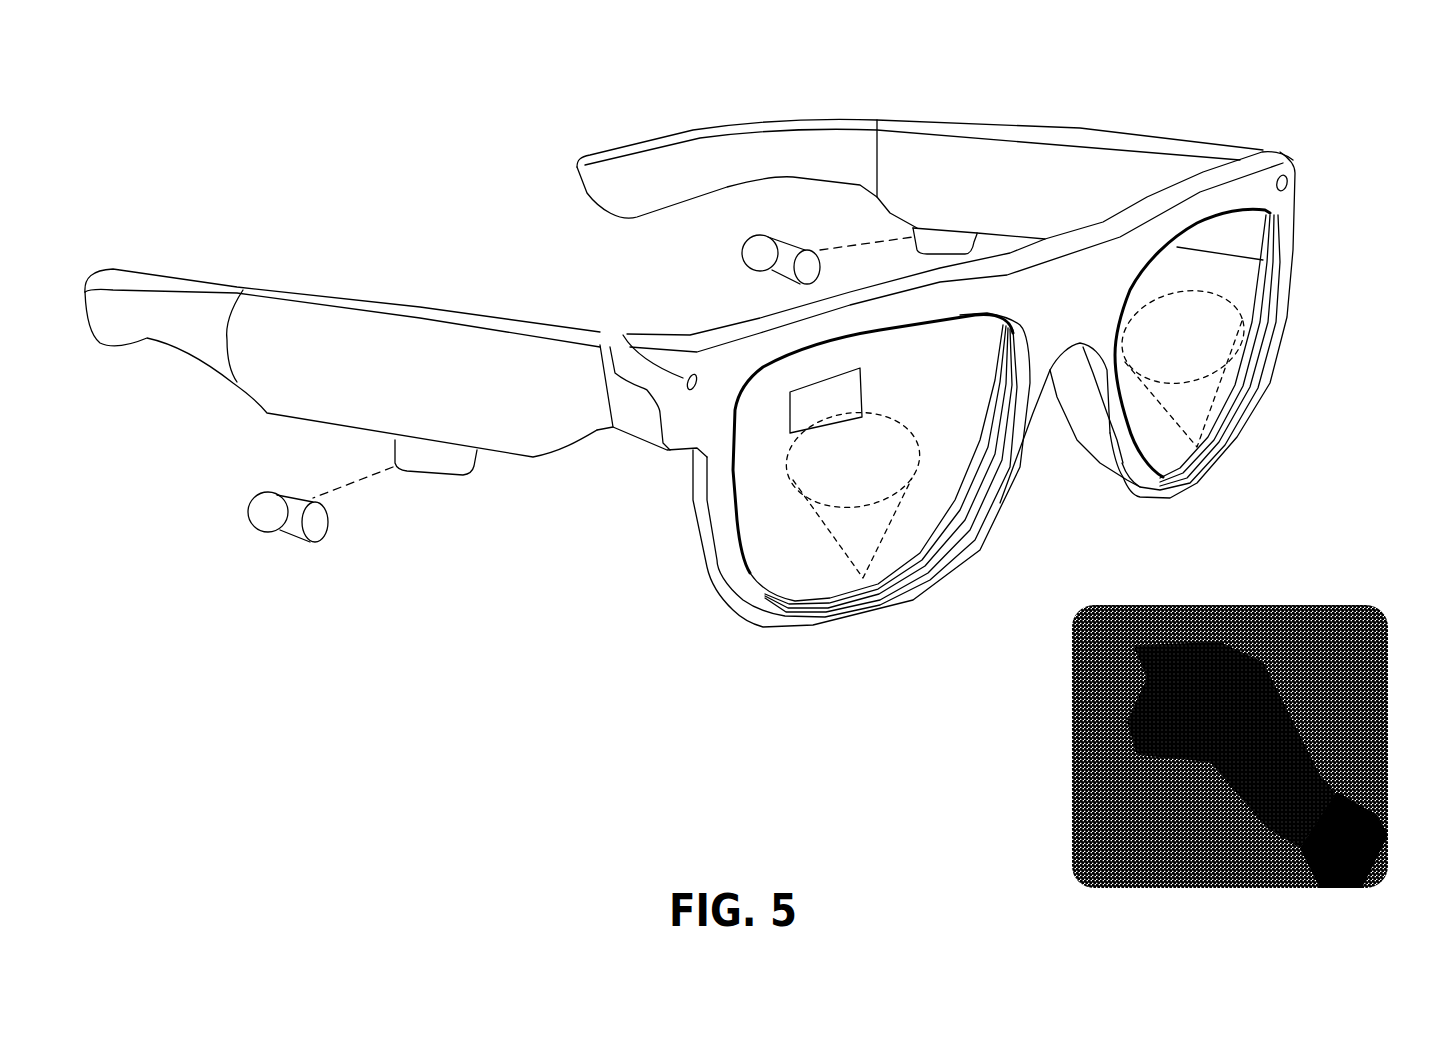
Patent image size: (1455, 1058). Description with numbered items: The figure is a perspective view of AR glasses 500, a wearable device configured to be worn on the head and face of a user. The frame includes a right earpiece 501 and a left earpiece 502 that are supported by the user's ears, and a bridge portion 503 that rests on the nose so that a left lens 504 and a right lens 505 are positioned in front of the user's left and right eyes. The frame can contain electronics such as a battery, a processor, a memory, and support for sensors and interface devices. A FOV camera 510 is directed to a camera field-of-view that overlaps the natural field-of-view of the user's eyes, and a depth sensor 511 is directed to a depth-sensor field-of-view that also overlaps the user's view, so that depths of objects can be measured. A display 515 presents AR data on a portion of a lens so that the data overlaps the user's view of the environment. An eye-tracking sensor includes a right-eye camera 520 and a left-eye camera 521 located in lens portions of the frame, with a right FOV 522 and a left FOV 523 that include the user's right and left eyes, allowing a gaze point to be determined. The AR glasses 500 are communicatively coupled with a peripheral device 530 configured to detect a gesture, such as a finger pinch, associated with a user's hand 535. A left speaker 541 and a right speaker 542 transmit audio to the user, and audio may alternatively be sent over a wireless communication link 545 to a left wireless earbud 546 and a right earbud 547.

The AR glasses 500 is at (184, 65).
The right earpiece 501 is at (397, 312).
The left earpiece 502 is at (1080, 140).
The bridge portion 503 is at (1058, 247).
The left lens 504 is at (1153, 277).
The right lens 505 is at (890, 345).
The FOV camera 510 is at (627, 337).
The depth sensor 511 is at (1290, 155).
The display 515 is at (790, 428).
The right-eye camera 520 is at (867, 593).
The left-eye camera 521 is at (1210, 467).
The right FOV 522 is at (787, 482).
The left FOV 523 is at (1217, 287).
The peripheral device 530 is at (1371, 791).
The user's hand 535 is at (1272, 650).
The left speaker 541 is at (948, 228).
The right speaker 542 is at (437, 477).
The wireless communication link 545 is at (853, 247).
The left wireless earbud 546 is at (793, 240).
The right earbud 547 is at (293, 543).